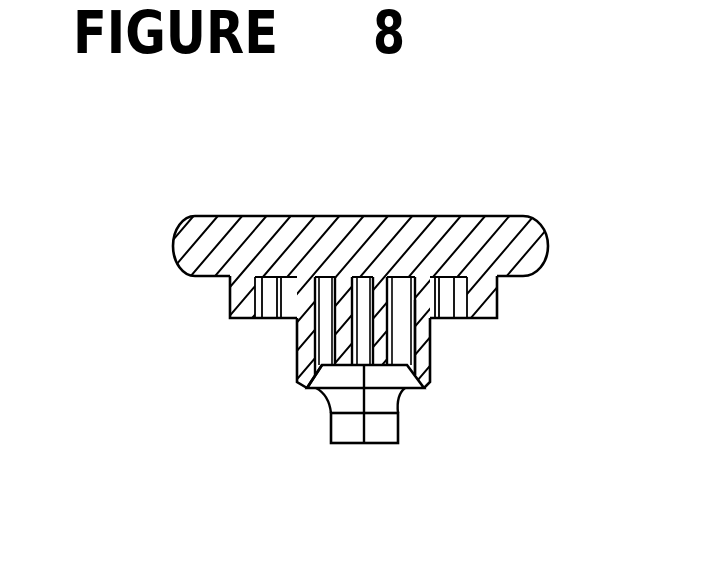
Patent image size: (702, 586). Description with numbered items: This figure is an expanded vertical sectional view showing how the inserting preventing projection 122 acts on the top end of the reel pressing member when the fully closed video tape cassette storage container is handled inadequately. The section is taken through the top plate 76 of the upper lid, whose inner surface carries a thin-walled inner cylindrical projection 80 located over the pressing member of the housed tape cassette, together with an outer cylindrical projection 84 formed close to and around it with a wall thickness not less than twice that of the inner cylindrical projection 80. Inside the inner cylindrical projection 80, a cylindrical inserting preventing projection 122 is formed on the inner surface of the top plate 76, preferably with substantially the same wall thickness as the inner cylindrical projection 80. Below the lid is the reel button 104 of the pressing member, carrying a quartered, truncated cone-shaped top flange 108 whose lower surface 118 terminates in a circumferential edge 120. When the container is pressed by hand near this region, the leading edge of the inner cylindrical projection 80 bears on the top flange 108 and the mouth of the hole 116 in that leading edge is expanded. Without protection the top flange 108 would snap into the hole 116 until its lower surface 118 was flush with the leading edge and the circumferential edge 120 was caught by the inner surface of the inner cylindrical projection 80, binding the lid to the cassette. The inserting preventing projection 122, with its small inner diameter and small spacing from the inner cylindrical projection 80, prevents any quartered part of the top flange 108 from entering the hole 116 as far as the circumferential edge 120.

The top plate 76 is at (442, 228).
The outer cylindrical projection 84 is at (238, 298).
The inner cylindrical projection 80 is at (305, 343).
The inserting preventing projection 122 is at (392, 315).
The hole 116 is at (405, 352).
The top flange 108 is at (350, 378).
The circumferential edge 120 is at (318, 395).
The lower surface 118 is at (414, 390).
The reel button 104 is at (380, 430).